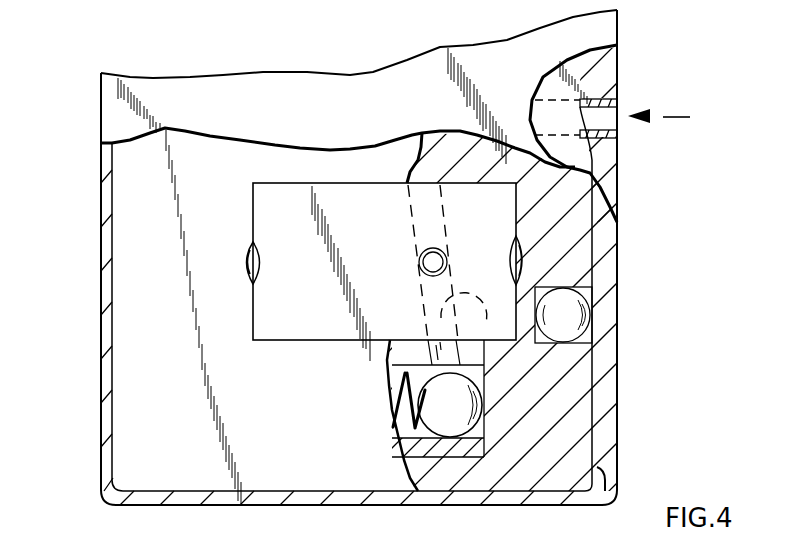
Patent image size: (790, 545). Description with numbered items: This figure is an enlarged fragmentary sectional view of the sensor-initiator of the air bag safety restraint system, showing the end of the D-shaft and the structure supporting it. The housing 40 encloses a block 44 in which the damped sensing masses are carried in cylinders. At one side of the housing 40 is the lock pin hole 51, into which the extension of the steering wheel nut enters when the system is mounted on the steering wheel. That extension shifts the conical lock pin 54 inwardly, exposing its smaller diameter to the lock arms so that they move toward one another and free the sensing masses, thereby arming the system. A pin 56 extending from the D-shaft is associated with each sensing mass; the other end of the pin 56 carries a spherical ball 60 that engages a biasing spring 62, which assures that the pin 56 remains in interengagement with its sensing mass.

The housing 40 is at (618, 355).
The block 44 is at (128, 318).
The lock pin hole 51 is at (600, 108).
The conical lock pin 54 is at (600, 118).
The pin 56 is at (457, 353).
The spherical ball 60 is at (463, 417).
The biasing spring 62 is at (398, 402).